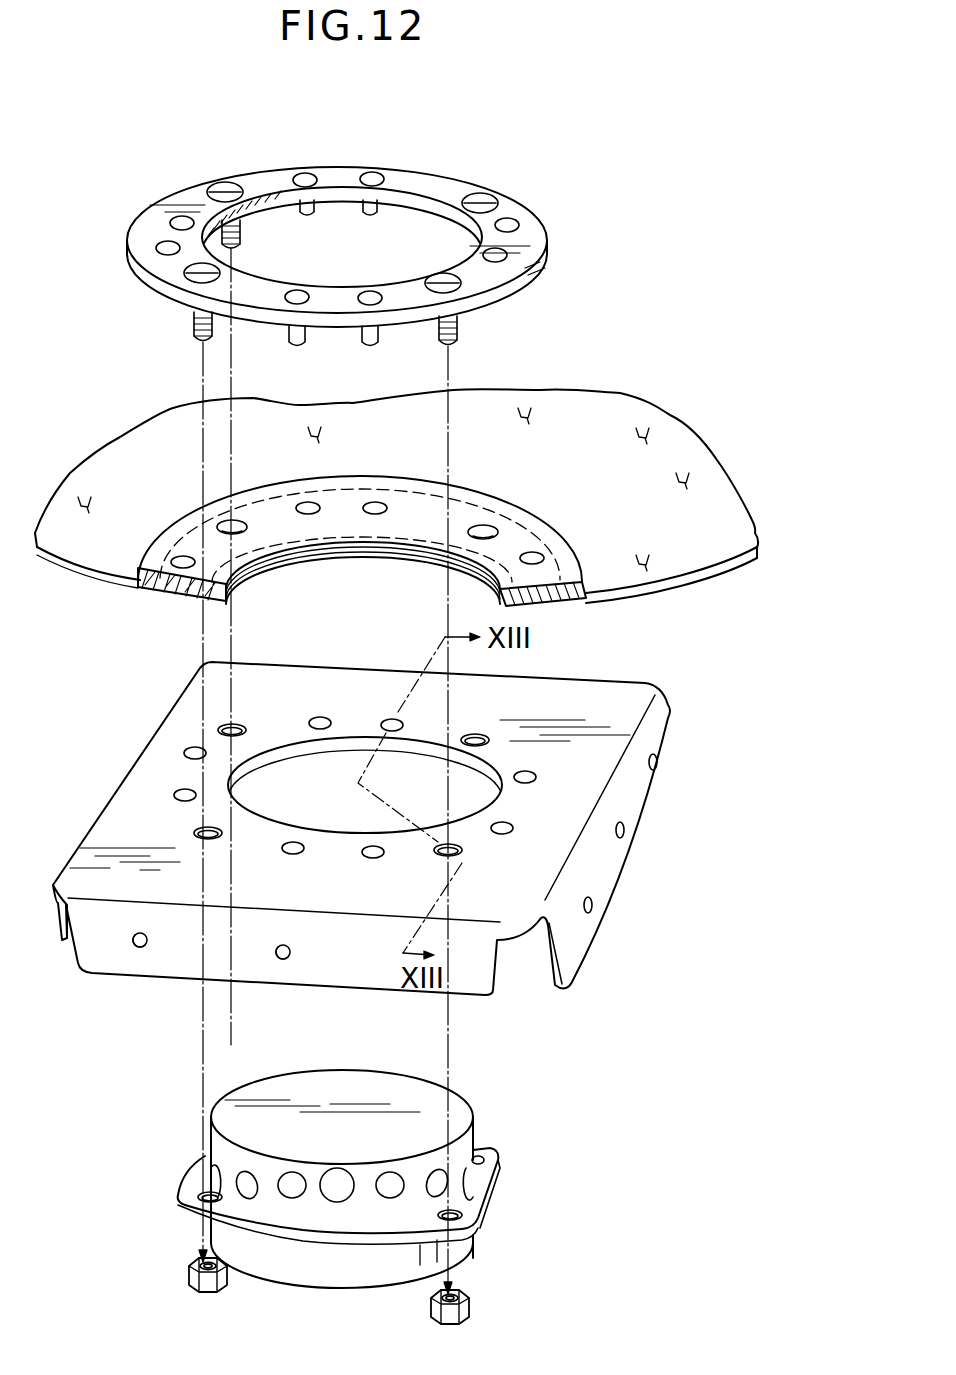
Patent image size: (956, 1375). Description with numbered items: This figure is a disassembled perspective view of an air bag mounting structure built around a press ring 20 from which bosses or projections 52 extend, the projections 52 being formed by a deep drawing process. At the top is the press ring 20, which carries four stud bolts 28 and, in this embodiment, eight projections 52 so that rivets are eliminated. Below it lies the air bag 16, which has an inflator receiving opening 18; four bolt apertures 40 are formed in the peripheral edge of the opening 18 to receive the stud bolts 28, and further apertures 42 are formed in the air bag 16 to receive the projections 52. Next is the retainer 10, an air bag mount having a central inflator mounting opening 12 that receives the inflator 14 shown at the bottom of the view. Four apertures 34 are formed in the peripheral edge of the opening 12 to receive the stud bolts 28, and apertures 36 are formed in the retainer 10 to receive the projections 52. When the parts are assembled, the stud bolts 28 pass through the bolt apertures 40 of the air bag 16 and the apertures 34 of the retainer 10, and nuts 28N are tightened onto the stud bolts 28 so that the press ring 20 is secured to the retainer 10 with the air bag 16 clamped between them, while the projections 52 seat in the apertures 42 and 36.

The retainer 10 is at (193, 888).
The inflator mounting opening 12 is at (297, 745).
The inflator 14 is at (498, 1177).
The air bag 16 is at (712, 560).
The inflator receiving opening 18 is at (425, 560).
The press ring 20 is at (455, 180).
The stud bolts 28 is at (225, 186).
The nuts 28N is at (188, 1266).
The apertures 34 is at (235, 724).
The apertures 36 is at (193, 747).
The bolt apertures 40 is at (234, 521).
The apertures 42 is at (183, 556).
The projections 52 is at (307, 216).